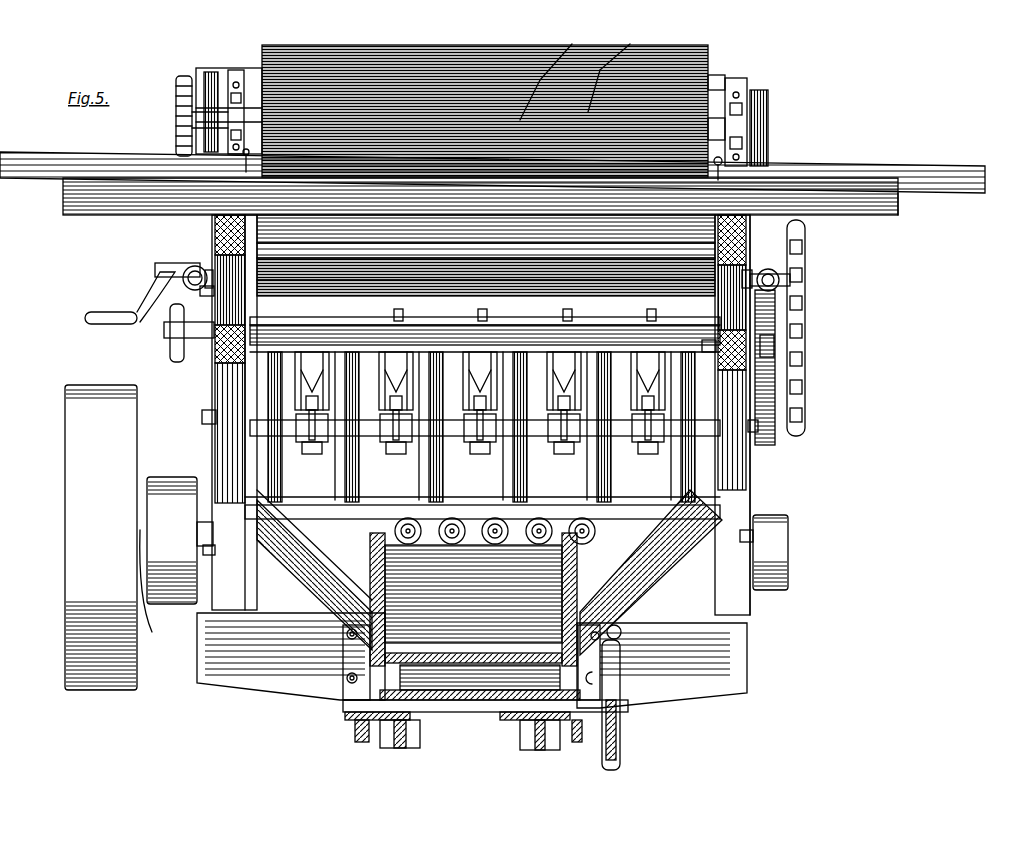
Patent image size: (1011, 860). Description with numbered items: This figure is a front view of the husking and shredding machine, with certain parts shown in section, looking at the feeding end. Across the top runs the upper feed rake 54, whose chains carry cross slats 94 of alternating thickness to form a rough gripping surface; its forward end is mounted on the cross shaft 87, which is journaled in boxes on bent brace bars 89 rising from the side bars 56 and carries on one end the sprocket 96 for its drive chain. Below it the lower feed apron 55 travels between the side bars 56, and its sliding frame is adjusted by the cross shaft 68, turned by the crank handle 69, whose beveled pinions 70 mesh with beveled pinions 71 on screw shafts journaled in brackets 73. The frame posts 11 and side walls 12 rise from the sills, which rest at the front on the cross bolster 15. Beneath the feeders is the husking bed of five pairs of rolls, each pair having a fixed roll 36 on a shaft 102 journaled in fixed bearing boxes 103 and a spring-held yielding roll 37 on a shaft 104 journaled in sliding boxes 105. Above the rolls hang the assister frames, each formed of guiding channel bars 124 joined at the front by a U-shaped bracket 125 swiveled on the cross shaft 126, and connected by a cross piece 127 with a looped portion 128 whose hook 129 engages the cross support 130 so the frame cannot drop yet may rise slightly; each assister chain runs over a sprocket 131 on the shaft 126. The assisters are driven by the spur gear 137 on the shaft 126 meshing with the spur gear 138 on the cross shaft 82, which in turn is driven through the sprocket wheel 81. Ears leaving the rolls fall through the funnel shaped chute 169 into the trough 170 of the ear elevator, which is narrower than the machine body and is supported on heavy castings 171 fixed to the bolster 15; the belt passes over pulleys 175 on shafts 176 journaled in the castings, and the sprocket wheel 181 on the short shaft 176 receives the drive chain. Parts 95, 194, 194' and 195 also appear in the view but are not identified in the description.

The posts 11 is at (240, 450).
The side walls 12 is at (250, 428).
The cross bolster 15 is at (706, 686).
The fixed husking roll 36 is at (495, 470).
The yielding husking roll 37 is at (463, 471).
The upper feed rake 54 is at (478, 40).
The lower feed apron 55 is at (540, 290).
The side bars 56 is at (232, 275).
The cross shaft 68 is at (460, 274).
The crank handle 69 is at (148, 296).
The beveled pinion 70 is at (215, 280).
The beveled pinion 71 is at (712, 302).
The bracket 73 is at (775, 272).
The sprocket wheel 81 is at (806, 382).
The cross shaft 82 is at (382, 314).
The cross shaft 87 is at (210, 118).
The bent brace bar 89 is at (236, 80).
The cross slat 94 is at (547, 71).
The roller covering 95 is at (615, 66).
The sprocket 96 is at (250, 72).
The fixed roll shaft 102 is at (473, 599).
The bearing box 103 is at (455, 545).
The yielding roll shaft 104 is at (540, 560).
The sliding bearing box 105 is at (527, 538).
The guiding channel bar 124 is at (410, 448).
The U-shaped bracket 125 is at (640, 430).
The cross shaft 126 is at (768, 452).
The cross piece 127 is at (412, 364).
The looped portion 128 is at (322, 362).
The hook 129 is at (478, 312).
The cross support 130 is at (516, 328).
The sprocket 131 is at (582, 366).
The spur gear 137 is at (760, 478).
The spur gear 138 is at (774, 345).
The funnel shaped chute 169 is at (612, 600).
The trough 170 is at (380, 652).
The bracket casting 171 is at (364, 650).
The pulley 175 is at (400, 750).
The shaft 176 is at (576, 745).
The sprocket wheel 181 is at (620, 745).
The link 194 is at (159, 589).
The wheel 194' is at (180, 540).
The wheel 195 is at (101, 537).